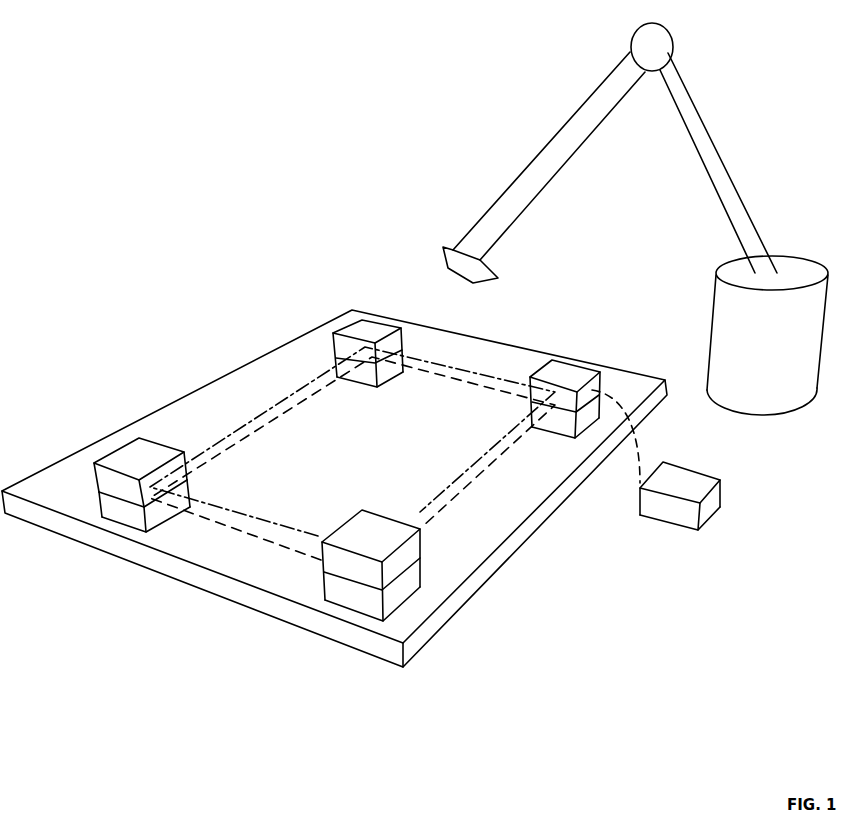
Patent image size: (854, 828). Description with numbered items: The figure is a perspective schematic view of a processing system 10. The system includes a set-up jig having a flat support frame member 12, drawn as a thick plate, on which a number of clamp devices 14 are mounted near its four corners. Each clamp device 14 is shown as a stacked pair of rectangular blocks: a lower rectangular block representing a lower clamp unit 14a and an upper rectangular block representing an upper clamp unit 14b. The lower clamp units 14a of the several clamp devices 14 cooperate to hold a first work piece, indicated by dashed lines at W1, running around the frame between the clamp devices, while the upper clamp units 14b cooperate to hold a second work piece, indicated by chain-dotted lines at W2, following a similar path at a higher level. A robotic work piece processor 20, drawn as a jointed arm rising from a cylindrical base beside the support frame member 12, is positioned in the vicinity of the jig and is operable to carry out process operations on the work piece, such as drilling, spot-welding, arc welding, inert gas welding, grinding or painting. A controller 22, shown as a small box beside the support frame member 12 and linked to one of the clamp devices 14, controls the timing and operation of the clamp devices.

The processing system 10 is at (298, 150).
The support frame member 12 is at (500, 558).
The clamp device 14 is at (340, 429).
The lower clamp unit 14a is at (110, 508).
The upper clamp unit 14b is at (122, 462).
The robotic work piece processor 20 is at (555, 120).
The controller 22 is at (663, 512).
The first work piece W1 is at (292, 528).
The second work piece W2 is at (300, 388).